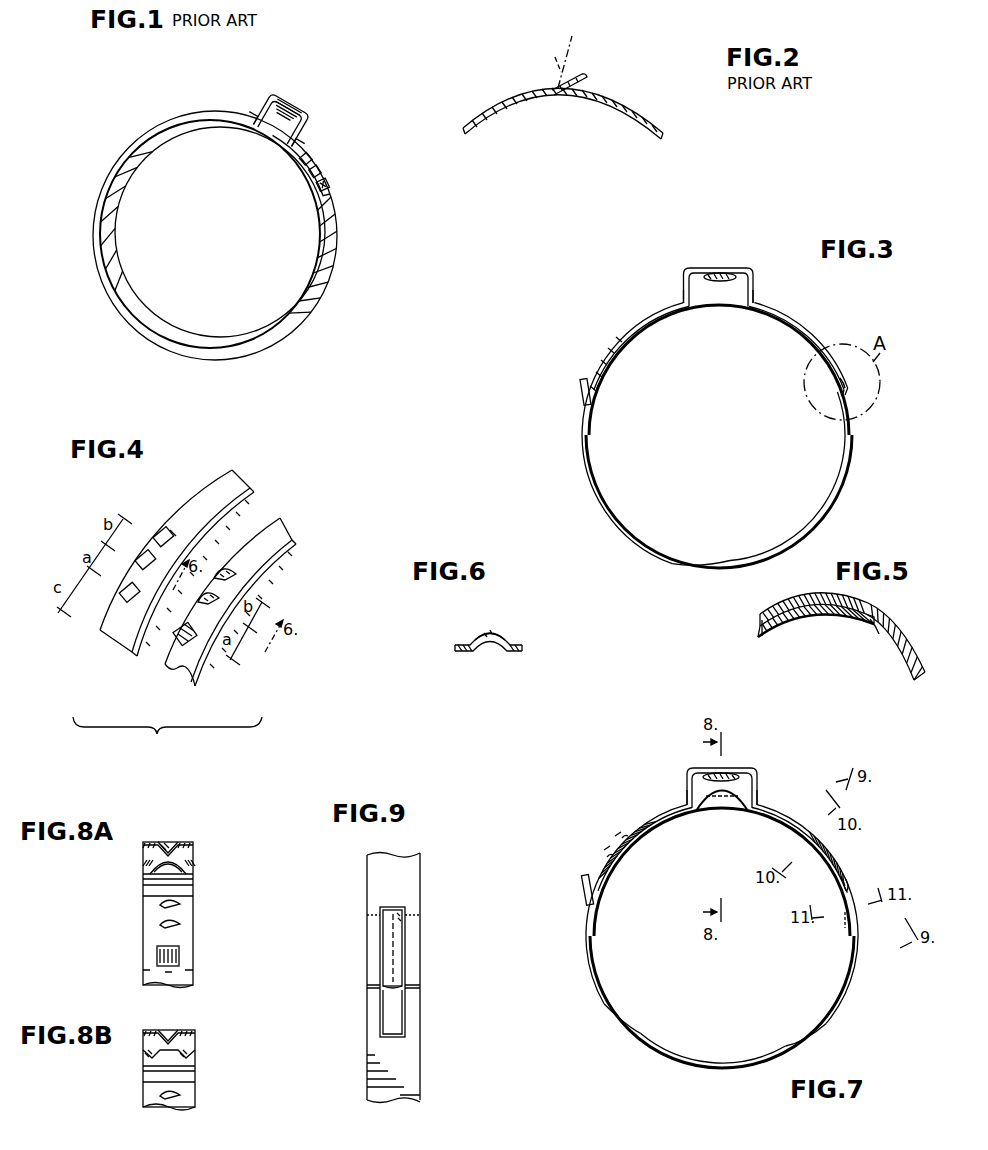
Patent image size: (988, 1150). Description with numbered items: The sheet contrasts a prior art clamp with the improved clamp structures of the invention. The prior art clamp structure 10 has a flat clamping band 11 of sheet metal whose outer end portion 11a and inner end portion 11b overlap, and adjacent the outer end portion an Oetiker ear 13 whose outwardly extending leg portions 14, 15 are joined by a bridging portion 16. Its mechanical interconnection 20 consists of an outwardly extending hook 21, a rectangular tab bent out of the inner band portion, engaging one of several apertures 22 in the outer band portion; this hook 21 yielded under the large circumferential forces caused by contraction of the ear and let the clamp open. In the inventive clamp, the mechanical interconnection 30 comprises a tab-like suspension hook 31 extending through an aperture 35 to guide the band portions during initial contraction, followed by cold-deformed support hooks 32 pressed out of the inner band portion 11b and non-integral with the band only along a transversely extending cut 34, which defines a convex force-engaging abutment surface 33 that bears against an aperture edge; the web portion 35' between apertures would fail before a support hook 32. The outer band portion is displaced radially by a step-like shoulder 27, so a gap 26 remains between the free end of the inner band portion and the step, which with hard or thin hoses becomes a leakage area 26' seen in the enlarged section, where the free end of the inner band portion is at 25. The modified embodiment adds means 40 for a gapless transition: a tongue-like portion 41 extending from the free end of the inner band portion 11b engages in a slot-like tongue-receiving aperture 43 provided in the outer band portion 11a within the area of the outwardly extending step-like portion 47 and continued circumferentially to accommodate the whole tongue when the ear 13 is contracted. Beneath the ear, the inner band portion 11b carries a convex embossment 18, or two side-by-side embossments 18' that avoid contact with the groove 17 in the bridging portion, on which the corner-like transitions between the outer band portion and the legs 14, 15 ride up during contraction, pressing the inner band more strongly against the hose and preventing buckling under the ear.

In FIG. 1, the clamp structure 10 is at (117, 138).
In FIG. 1, the clamping band 11 is at (148, 337).
In FIG. 3, the clamping band 11 is at (600, 490).
In FIG. 7, the clamping band 11 is at (628, 1035).
In FIG. 1, the outer end portion 11a is at (313, 145).
In FIG. 3, the outer end portion 11a is at (648, 315).
In FIG. 4, the outer end portion 11a is at (233, 483).
In FIG. 5, the outer end portion 11a is at (773, 606).
In FIG. 7, the outer end portion 11a is at (648, 812).
In FIG. 9, the outer end portion 11a is at (404, 883).
In FIG. 1, the inner end portion 11b is at (285, 160).
In FIG. 2, the inner end portion 11b is at (629, 117).
In FIG. 3, the inner end portion 11b is at (775, 318).
In FIG. 4, the inner end portion 11b is at (278, 530).
In FIG. 6, the inner end portion 11b is at (525, 650).
In FIG. 5, the inner end portion 11b is at (806, 630).
In FIG. 7, the inner end portion 11b is at (770, 813).
In FIG. 8A, the inner end portion 11b is at (143, 874).
In FIG. 8B, the inner end portion 11b is at (145, 1066).
In FIG. 1, the ear 13 is at (306, 104).
In FIG. 3, the ear 13 is at (745, 265).
In FIG. 7, the ear 13 is at (755, 766).
In FIG. 1, the leg portion 14 is at (258, 112).
In FIG. 3, the leg portion 14 is at (683, 286).
In FIG. 7, the leg portion 14 is at (688, 790).
In FIG. 1, the leg portion 15 is at (308, 136).
In FIG. 3, the leg portion 15 is at (754, 286).
In FIG. 7, the leg portion 15 is at (758, 790).
In FIG. 1, the bridging portion 16 is at (271, 100).
In FIG. 3, the bridging portion 16 is at (702, 270).
In FIG. 7, the bridging portion 16 is at (730, 770).
In FIG. 8A, the bridging portion 16 is at (150, 842).
In FIG. 8B, the bridging portion 16 is at (150, 1032).
In FIG. 3, the groove 17 is at (725, 272).
In FIG. 7, the groove 17 is at (714, 772).
In FIG. 8A, the groove 17 is at (170, 842).
In FIG. 8B, the groove 17 is at (171, 1032).
In FIG. 7, the embossment 18 is at (722, 816).
In FIG. 8A, the embossment 18 is at (193, 854).
In FIG. 8B, the embossments 18' is at (173, 1050).
In FIG. 1, the mechanical interconnection 20 is at (338, 179).
In FIG. 1, the hook 21 is at (322, 192).
In FIG. 2, the hook 21 is at (585, 75).
In FIG. 1, the apertures 22 is at (325, 168).
In FIG. 5, the free end of inner band portion 25 is at (770, 638).
In FIG. 3, the gap 26 is at (807, 392).
In FIG. 5, the leakage area 26' is at (863, 651).
In FIG. 3, the step-like shoulder 27 is at (851, 387).
In FIG. 5, the step-like shoulder 27 is at (888, 624).
In FIG. 3, the mechanical interconnection 30 is at (592, 345).
In FIG. 7, the mechanical interconnection 30 is at (576, 875).
In FIG. 3, the suspension hook 31 is at (585, 378).
In FIG. 4, the suspension hook 31 is at (173, 633).
In FIG. 7, the suspension hook 31 is at (585, 889).
In FIG. 8A, the suspension hook 31 is at (156, 951).
In FIG. 4, the cold-deformed support hook 32 is at (236, 574).
In FIG. 6, the cold-deformed support hook 32 is at (478, 637).
In FIG. 7, the cold-deformed support hook 32 is at (599, 846).
In FIG. 8A, the cold-deformed support hook 32 is at (186, 921).
In FIG. 8B, the cold-deformed support hook 32 is at (181, 1094).
In FIG. 6, the force-engaging abutment surface 33 is at (497, 637).
In FIG. 4, the transversely extending cut 34 is at (216, 600).
In FIG. 4, the apertures 35 is at (124, 555).
In FIG. 7, the apertures 35 is at (591, 830).
In FIG. 4, the web portion 35' is at (203, 540).
In FIG. 7, the means for gapless transition 40 is at (848, 853).
In FIG. 7, the tongue-like portion 41 is at (840, 874).
In FIG. 9, the tongue-like portion 41 is at (398, 945).
In FIG. 7, the tongue-receiving aperture 43 is at (841, 930).
In FIG. 9, the tongue-receiving aperture 43 is at (402, 1020).
In FIG. 7, the step-like portion 47 is at (852, 891).
In FIG. 9, the step-like portion 47 is at (408, 984).